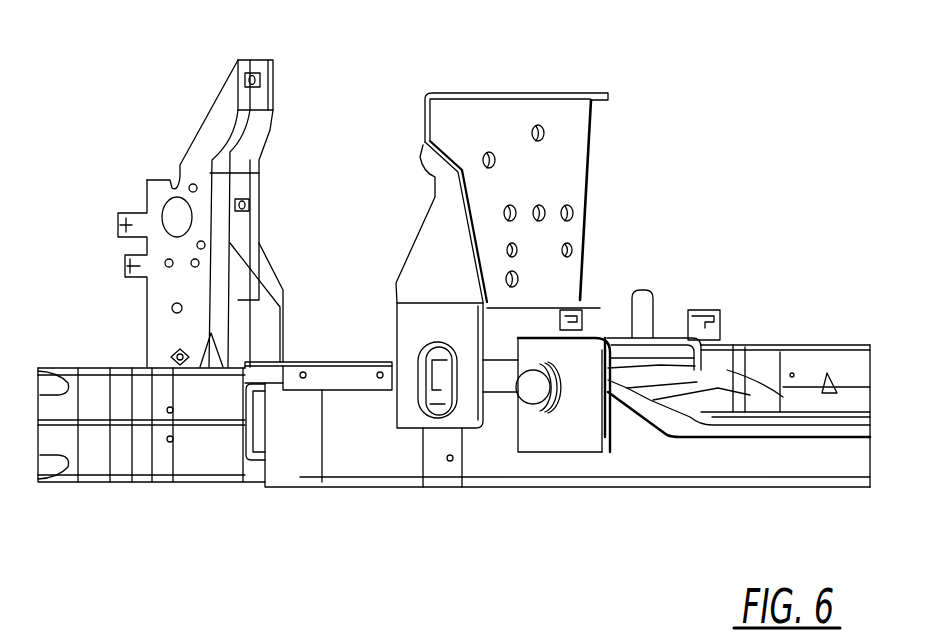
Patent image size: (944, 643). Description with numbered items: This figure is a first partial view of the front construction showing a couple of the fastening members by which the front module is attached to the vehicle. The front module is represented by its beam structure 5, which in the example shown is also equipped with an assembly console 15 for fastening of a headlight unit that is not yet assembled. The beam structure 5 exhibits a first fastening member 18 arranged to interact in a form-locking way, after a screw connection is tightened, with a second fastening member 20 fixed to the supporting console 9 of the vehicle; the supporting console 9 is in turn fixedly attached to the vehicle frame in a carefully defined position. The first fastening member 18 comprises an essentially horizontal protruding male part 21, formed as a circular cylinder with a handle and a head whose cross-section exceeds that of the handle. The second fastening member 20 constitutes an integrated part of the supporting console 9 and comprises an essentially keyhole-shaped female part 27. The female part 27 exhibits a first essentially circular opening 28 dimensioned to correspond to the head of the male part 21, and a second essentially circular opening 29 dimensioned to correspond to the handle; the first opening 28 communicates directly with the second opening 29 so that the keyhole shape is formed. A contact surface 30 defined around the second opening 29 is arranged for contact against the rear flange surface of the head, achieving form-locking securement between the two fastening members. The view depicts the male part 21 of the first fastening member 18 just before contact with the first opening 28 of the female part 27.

The assembly console 15 is at (212, 94).
The female part 27 is at (412, 407).
The supporting console 9 is at (570, 163).
The second fastening member 20 is at (407, 347).
The second opening 29 is at (432, 345).
The first opening 28 is at (440, 408).
The contact surface 30 is at (450, 343).
The first fastening member 18 is at (562, 428).
The male part 21 is at (535, 390).
The beam structure 5 is at (742, 331).